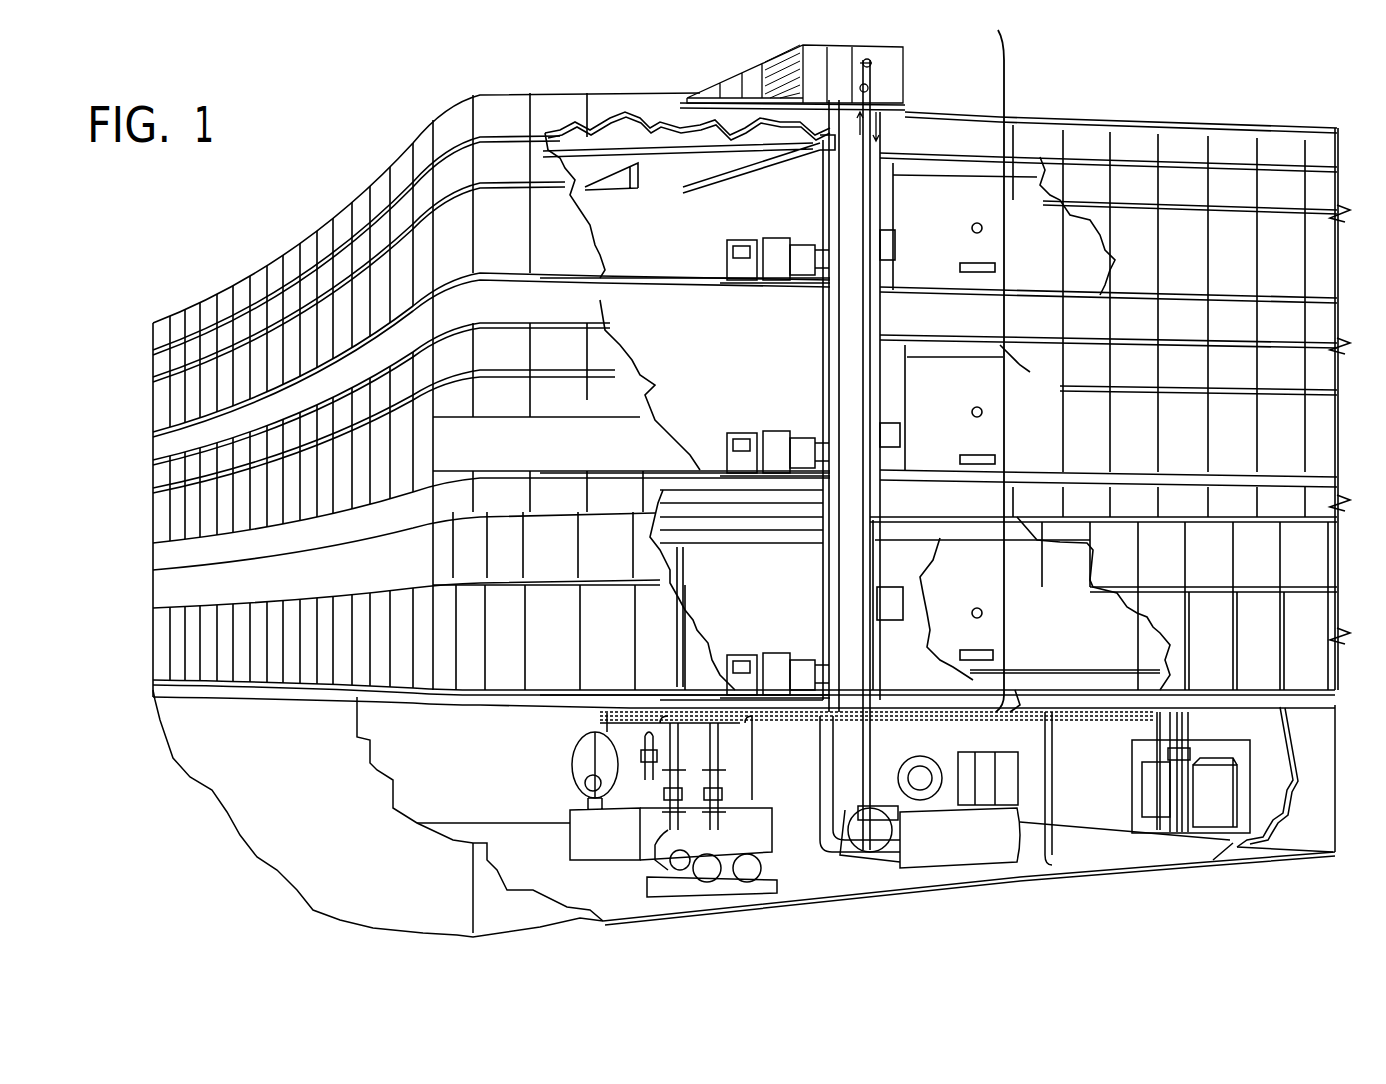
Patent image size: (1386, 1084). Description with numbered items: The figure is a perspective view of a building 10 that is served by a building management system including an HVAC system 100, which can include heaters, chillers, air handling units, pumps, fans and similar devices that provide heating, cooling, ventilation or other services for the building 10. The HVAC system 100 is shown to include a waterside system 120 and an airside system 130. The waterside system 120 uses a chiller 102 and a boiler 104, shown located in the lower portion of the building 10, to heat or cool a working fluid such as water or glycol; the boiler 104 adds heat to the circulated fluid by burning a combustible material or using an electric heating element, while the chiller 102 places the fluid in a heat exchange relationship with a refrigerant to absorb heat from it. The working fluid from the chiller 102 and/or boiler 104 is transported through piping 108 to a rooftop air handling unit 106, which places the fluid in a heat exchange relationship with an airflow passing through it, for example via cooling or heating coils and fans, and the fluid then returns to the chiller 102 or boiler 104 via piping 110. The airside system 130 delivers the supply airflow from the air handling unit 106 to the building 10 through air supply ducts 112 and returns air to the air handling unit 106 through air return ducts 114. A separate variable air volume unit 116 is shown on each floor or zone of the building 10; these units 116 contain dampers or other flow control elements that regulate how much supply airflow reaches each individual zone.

The building 10 is at (313, 147).
The HVAC system 100 is at (1058, 884).
The chiller 102 is at (953, 840).
The boiler 104 is at (585, 762).
The rooftop air handling unit 106 is at (895, 98).
The piping 108 is at (795, 48).
The piping 110 is at (878, 68).
The air supply ducts 112 is at (830, 170).
The air return ducts 114 is at (729, 262).
The variable air volume unit 116 is at (778, 260).
The waterside system 120 is at (1055, 790).
The airside system 130 is at (1012, 375).